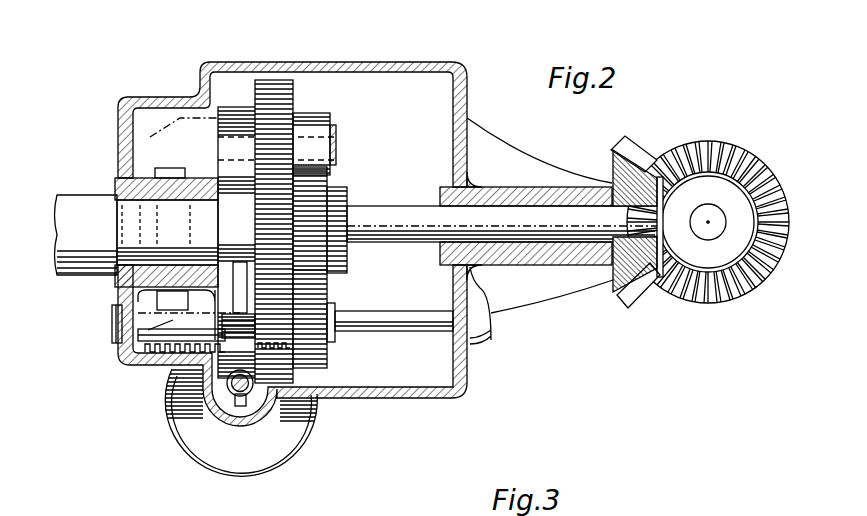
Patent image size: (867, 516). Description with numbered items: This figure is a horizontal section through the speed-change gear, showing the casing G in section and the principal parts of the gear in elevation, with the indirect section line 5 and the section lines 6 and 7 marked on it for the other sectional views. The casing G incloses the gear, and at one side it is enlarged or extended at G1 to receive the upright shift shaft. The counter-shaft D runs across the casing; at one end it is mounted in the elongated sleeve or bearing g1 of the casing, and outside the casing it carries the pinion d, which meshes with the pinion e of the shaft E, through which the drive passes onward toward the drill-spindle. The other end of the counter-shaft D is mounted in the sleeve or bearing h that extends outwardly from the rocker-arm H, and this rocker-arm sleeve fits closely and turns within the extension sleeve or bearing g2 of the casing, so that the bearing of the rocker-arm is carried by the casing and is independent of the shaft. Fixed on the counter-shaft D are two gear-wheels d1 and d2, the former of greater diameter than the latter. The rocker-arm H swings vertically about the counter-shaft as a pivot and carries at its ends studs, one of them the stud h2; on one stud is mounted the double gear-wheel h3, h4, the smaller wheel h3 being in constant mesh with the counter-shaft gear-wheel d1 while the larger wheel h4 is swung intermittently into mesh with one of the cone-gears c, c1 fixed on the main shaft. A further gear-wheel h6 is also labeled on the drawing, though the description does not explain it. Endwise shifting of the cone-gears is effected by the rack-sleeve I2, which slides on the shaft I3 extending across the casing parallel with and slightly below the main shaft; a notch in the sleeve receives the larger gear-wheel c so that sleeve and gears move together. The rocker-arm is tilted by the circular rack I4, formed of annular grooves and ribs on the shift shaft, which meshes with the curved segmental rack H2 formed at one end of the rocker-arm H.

The casing G is at (300, 227).
The enlarged or extended part of the casing G1 is at (257, 422).
The elongated sleeve or bearing g1 is at (558, 186).
The extension sleeve or bearing g2 is at (142, 184).
The rocker-arm H is at (230, 170).
The curved segmental rack H2 is at (150, 372).
The sleeve or bearing h is at (137, 235).
The stud h2 is at (328, 128).
The gear-wheel h3 is at (340, 357).
The gear-wheel h4 is at (302, 375).
The gear wheel h6 is at (272, 97).
The pinion d is at (634, 160).
The gear-wheel d1 is at (273, 232).
The gear-wheel d2 is at (326, 193).
The counter-shaft D is at (503, 212).
The pinion e is at (743, 170).
The shaft E is at (709, 228).
The gear-wheel c is at (133, 300).
The gear-wheel c1 is at (230, 167).
The rack-sleeve I2 is at (120, 340).
The shaft I3 is at (414, 312).
The circular rack I4 is at (217, 422).
The section line 5 5 is at (212, 62).
The section line 6 6 is at (238, 107).
The section line 7 7 is at (360, 410).